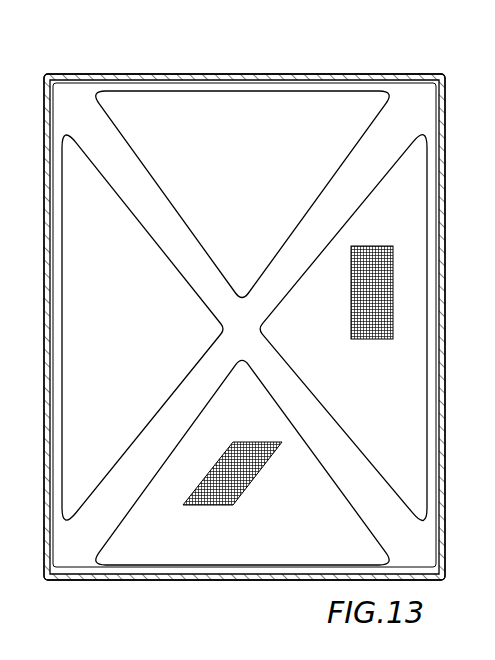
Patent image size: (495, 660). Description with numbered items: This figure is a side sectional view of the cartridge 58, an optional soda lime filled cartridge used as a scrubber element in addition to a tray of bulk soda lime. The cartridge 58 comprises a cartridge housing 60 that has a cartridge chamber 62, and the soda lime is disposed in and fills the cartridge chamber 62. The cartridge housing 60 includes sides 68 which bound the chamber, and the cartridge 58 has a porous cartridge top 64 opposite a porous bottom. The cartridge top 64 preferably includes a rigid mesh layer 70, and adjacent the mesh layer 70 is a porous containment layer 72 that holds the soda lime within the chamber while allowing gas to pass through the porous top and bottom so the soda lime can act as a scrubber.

The cartridge 58 is at (428, 62).
The cartridge housing 60 is at (344, 59).
The cartridge chamber 62 is at (136, 334).
The cartridge top 64 is at (138, 557).
The sides 68 is at (242, 75).
The rigid mesh layer 70 is at (247, 485).
The porous containment layer 72 is at (377, 246).